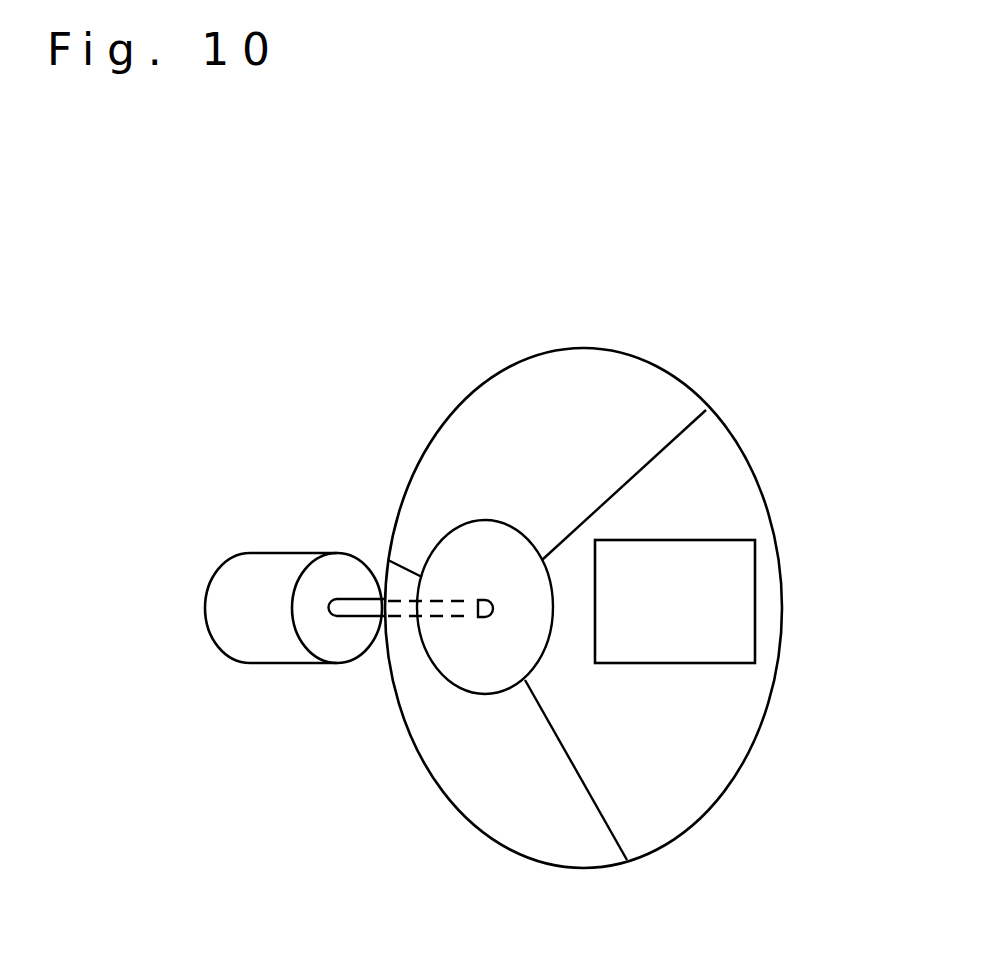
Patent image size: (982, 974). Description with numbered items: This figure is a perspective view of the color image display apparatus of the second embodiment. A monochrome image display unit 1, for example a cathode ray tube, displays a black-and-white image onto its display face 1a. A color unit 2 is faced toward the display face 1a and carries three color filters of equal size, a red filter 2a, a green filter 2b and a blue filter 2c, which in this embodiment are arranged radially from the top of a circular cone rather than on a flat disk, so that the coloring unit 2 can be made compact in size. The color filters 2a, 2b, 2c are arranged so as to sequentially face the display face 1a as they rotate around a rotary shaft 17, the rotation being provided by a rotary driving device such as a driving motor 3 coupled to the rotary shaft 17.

The monochrome image display unit 1 is at (755, 640).
The display face 1a is at (735, 582).
The color unit 2 is at (743, 450).
The red color filter 2a is at (722, 755).
The green color filter 2b is at (567, 372).
The blue color filter 2c is at (500, 827).
The driving motor 3 is at (265, 565).
The rotary shaft 17 is at (355, 608).